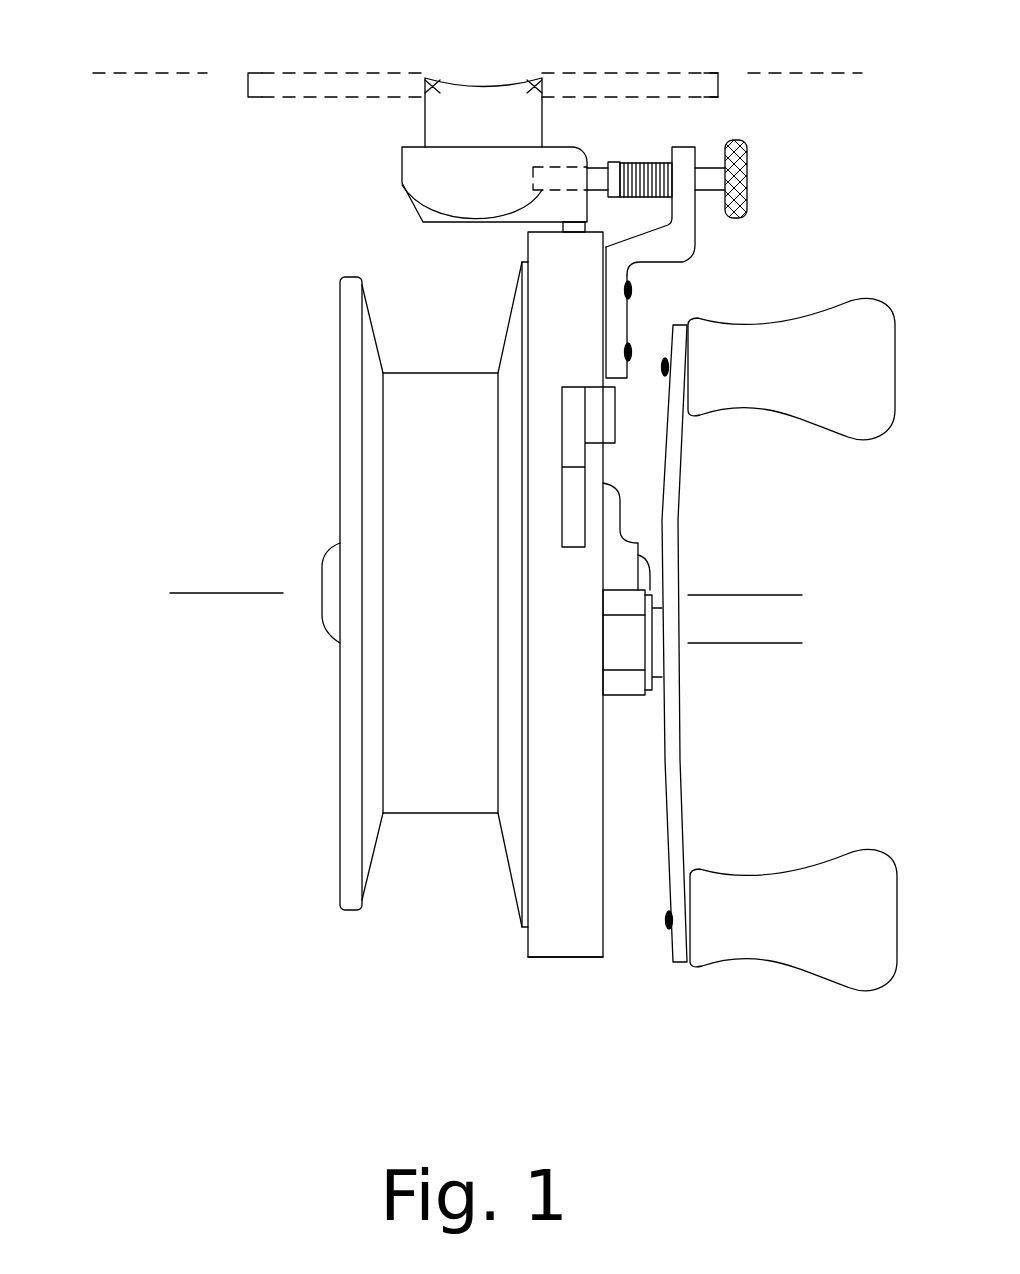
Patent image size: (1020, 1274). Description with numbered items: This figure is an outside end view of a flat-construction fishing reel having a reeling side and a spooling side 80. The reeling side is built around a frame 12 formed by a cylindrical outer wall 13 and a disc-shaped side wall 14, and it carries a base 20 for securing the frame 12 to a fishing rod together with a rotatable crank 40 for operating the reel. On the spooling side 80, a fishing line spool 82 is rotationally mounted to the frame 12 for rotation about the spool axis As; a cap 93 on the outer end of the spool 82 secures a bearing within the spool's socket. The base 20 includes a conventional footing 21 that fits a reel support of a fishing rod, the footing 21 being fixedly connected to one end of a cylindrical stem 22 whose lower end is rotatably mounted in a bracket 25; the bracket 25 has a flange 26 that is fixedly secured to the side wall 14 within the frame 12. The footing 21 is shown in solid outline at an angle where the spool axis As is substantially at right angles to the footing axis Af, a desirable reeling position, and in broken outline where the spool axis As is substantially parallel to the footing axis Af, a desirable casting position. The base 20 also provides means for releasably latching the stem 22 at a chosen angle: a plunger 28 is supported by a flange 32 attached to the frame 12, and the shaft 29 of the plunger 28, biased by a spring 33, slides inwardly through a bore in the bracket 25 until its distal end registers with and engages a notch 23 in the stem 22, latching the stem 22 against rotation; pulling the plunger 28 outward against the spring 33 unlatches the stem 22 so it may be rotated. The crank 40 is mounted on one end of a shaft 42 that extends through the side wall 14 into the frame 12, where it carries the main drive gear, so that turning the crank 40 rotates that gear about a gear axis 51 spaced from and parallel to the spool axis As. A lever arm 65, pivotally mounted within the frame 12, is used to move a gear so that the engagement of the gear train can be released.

The frame 12 is at (553, 972).
The cylindrical outer wall 13 is at (587, 808).
The side wall 14 is at (605, 932).
The base 20 is at (366, 214).
The footing 21 is at (515, 77).
The cylindrical stem 22 is at (437, 117).
The notch 23 is at (535, 178).
The bracket 25 is at (398, 165).
The flange 26 is at (580, 225).
The plunger 28 is at (740, 140).
The shaft 29 is at (593, 165).
The flange 32 is at (688, 234).
The spring 33 is at (642, 163).
The crank 40 is at (677, 763).
The shaft 42 is at (655, 685).
The gear axis 51 is at (732, 645).
The lever arm 65 is at (578, 390).
The spooling side 80 is at (355, 594).
The fishing line spool 82 is at (350, 503).
The cap 93 is at (325, 618).
The axis of the footing Af is at (162, 72).
The spool axis As is at (240, 592).